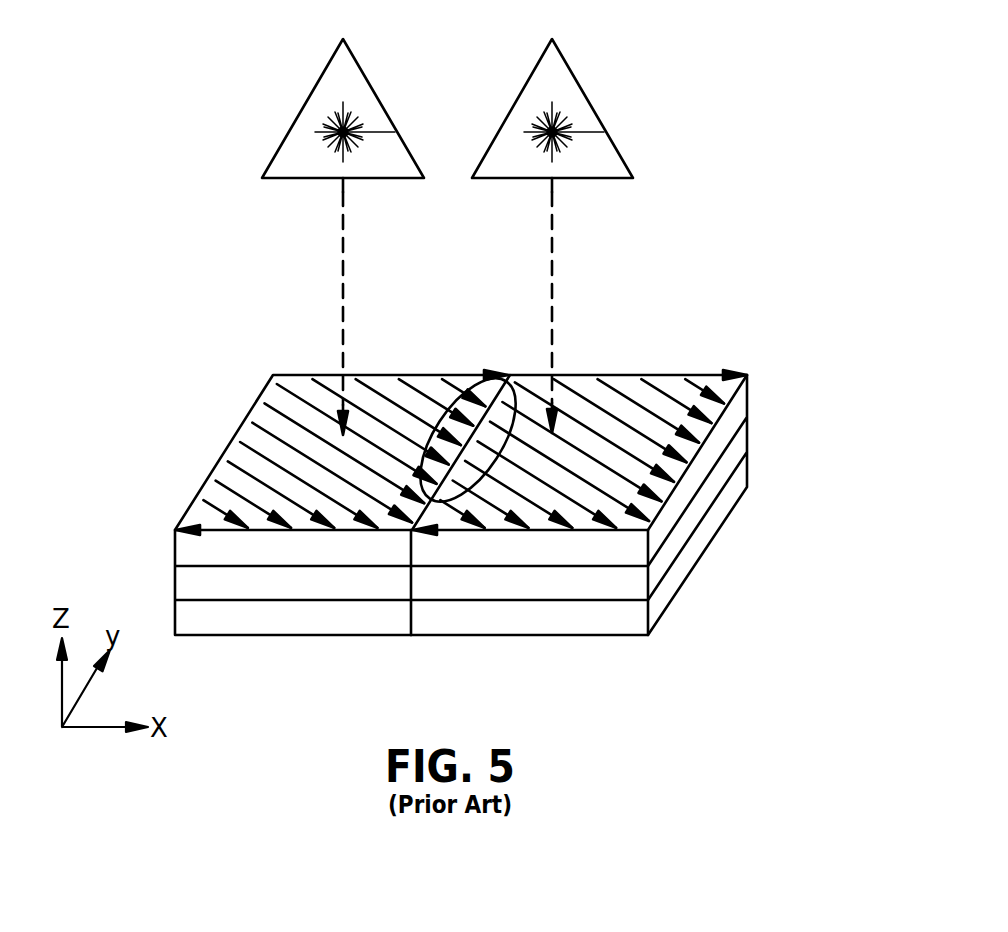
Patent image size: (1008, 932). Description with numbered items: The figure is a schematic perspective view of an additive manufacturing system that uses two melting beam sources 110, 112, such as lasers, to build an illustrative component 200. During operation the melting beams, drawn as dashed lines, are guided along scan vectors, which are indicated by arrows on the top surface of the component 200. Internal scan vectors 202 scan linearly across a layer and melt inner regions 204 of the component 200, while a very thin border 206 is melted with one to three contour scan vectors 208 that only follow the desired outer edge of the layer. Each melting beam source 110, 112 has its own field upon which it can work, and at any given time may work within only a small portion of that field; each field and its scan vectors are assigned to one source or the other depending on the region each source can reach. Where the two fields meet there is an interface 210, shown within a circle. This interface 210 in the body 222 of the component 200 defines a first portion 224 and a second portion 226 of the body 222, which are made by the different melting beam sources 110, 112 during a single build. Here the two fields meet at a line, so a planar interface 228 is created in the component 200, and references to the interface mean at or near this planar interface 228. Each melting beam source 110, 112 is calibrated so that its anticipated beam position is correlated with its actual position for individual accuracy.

The melting beam source 110 is at (302, 108).
The melting beam source 112 is at (595, 103).
The component 200 is at (522, 459).
The internal scan vectors 202 is at (412, 388).
The inner regions 204 is at (325, 450).
The border 206 is at (313, 377).
The contour scan vectors 208 is at (247, 408).
The interface 210 is at (525, 383).
The body 222 is at (575, 385).
The first portion 224 is at (300, 522).
The second portion 226 is at (535, 522).
The planar interface 228 is at (410, 590).